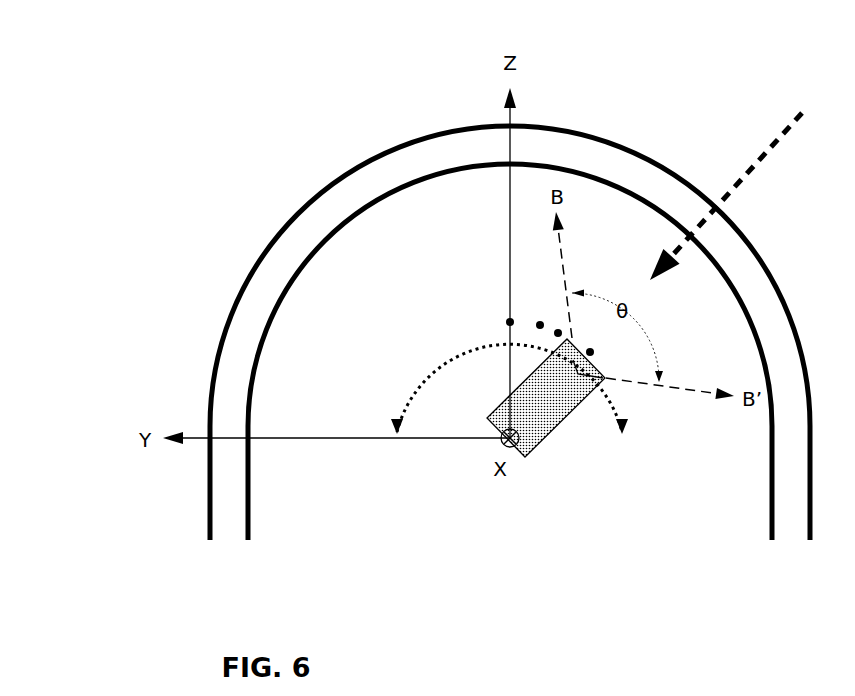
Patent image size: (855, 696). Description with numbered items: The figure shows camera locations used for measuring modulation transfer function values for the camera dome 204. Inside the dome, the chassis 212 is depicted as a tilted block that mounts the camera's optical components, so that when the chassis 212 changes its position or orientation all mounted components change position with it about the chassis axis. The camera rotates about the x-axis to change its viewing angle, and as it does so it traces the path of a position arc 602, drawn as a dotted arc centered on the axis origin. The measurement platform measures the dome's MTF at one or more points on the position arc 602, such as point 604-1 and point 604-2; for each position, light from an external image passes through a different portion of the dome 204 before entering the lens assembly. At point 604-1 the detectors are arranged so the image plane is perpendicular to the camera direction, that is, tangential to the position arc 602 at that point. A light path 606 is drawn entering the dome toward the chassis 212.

The camera dome 204 is at (308, 227).
The chassis 212 is at (542, 417).
The position arc 602 is at (410, 379).
The point 604-1 is at (590, 352).
The point 604-2 is at (540, 325).
The light path 606 is at (768, 148).